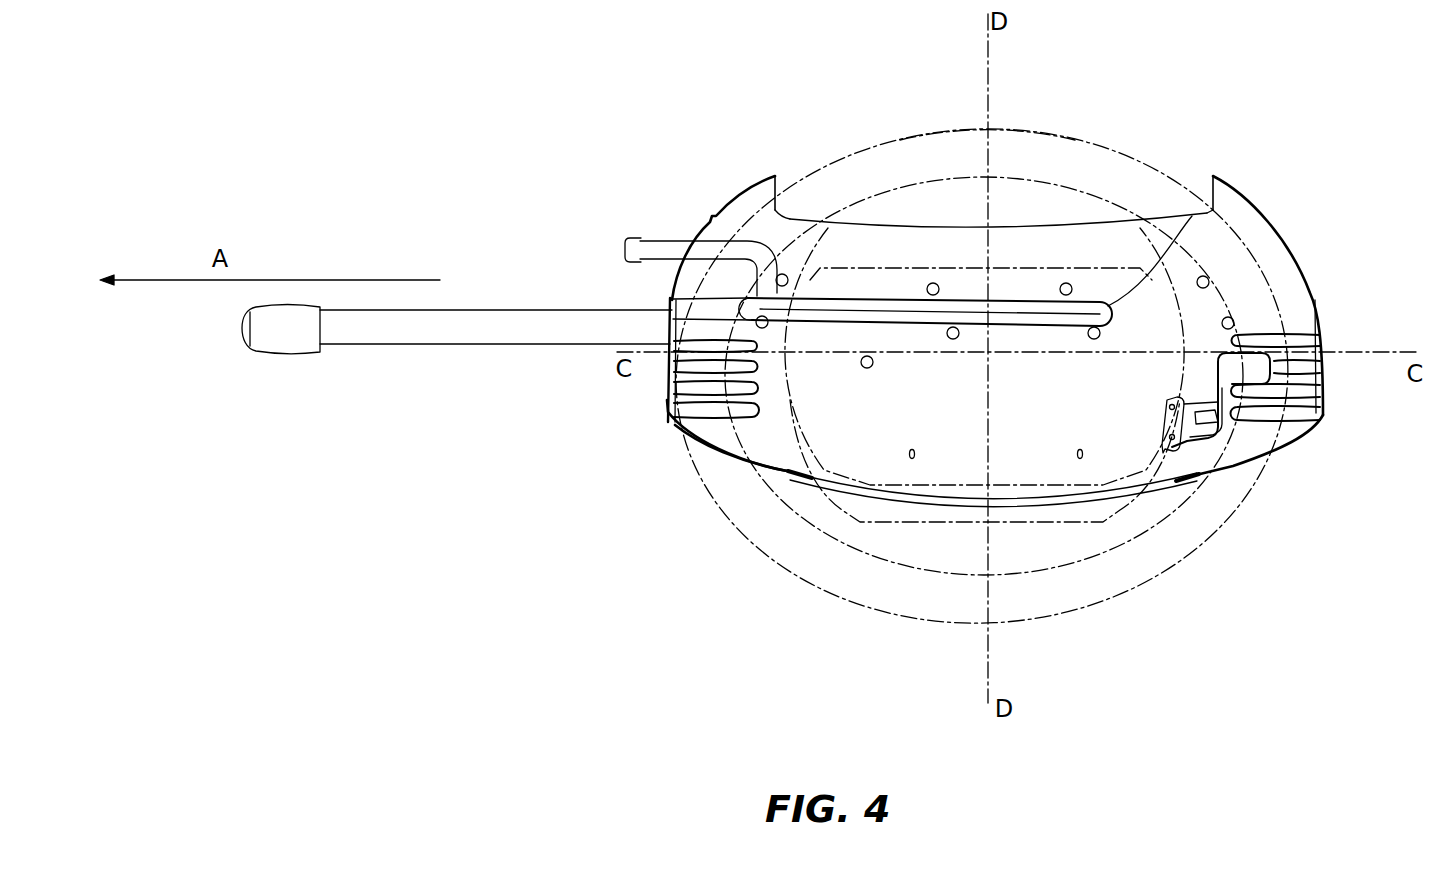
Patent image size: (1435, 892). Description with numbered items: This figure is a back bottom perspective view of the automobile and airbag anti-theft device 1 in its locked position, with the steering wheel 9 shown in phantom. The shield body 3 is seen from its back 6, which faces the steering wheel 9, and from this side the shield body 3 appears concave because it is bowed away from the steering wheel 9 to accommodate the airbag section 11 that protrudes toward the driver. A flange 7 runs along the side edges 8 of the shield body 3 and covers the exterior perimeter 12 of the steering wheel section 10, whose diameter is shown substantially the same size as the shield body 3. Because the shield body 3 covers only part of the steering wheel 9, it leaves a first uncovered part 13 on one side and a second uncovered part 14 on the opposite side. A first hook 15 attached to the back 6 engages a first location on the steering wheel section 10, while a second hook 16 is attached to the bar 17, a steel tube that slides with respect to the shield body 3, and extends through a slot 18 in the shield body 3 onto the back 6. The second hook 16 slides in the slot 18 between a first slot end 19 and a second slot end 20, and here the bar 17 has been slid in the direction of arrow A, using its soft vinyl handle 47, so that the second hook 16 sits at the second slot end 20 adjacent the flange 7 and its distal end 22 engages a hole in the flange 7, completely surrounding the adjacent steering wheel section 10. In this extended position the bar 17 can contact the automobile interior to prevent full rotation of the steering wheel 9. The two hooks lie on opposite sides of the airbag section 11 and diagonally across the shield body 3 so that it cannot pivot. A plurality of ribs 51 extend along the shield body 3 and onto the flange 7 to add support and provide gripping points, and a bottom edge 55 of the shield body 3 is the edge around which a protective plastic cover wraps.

The automobile and airbag anti-theft device 1 is at (665, 157).
The shield body 3 is at (953, 229).
The back 6 is at (963, 407).
The flange 7 is at (775, 177).
The side edges 8 is at (788, 214).
The steering wheel 9 is at (978, 129).
The steering wheel section 10 is at (897, 163).
The airbag section 11 is at (972, 470).
The exterior perimeter 12 is at (1097, 151).
The first uncovered part 13 is at (1009, 172).
The second uncovered part 14 is at (1108, 590).
The first hook 15 is at (1220, 424).
The second hook 16 is at (663, 252).
The bar 17 is at (459, 340).
The slot 18 is at (1004, 298).
The first slot end 19 is at (1147, 302).
The second slot end 20 is at (668, 294).
The distal end 22 is at (624, 250).
The handle 47 is at (287, 344).
The ribs 51 is at (665, 397).
The bottom edge 55 is at (727, 452).